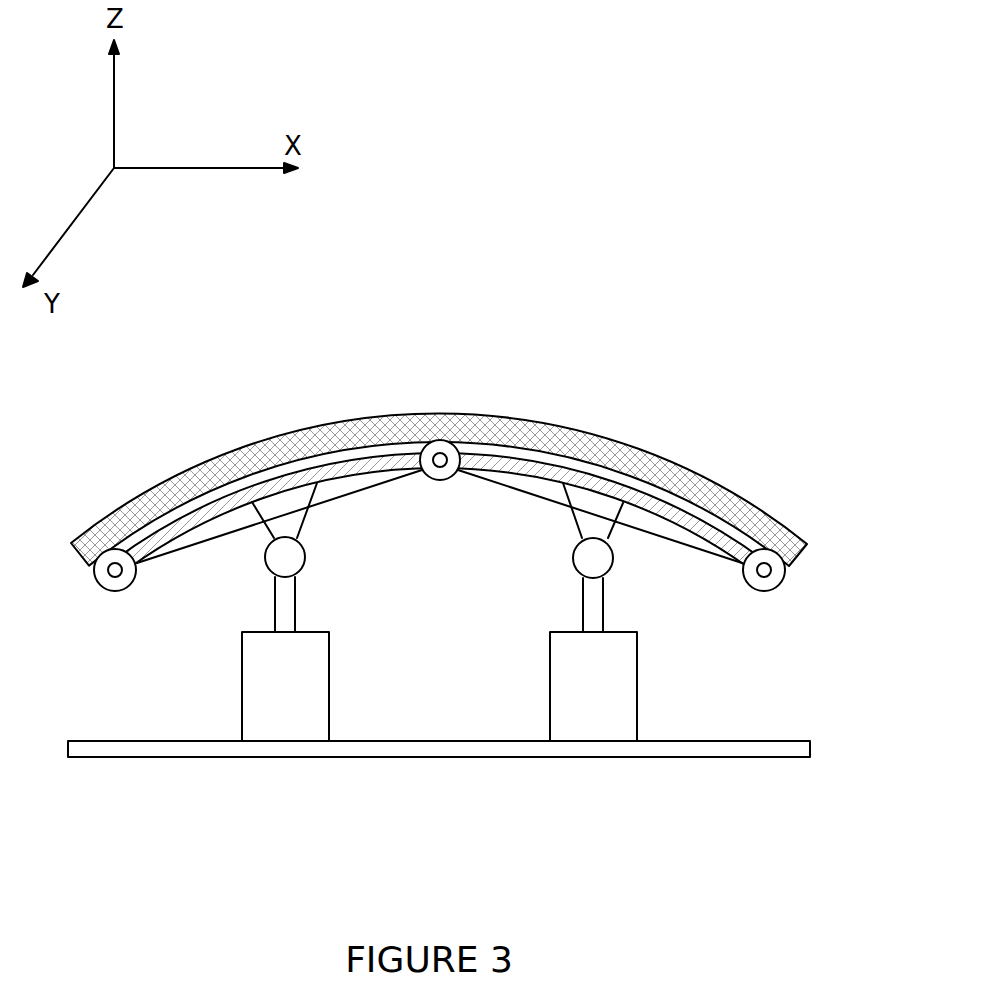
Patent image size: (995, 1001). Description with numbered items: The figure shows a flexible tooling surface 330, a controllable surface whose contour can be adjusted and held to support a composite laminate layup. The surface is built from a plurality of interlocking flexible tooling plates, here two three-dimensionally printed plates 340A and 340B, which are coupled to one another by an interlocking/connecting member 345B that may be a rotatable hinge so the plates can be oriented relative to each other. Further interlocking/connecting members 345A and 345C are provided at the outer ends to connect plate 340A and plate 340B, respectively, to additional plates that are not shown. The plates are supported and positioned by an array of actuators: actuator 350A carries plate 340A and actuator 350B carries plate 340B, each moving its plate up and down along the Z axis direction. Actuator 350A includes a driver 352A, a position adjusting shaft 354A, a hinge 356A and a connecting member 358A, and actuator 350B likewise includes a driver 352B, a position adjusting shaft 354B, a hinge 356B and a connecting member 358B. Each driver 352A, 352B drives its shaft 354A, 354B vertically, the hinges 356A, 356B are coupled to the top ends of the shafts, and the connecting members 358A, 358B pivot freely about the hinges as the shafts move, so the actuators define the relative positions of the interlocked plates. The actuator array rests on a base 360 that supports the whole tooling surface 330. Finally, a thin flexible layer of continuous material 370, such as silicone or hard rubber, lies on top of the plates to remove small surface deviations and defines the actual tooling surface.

The flexible tooling surface 330 is at (634, 271).
The flexible tooling plate 340A is at (181, 578).
The flexible tooling plate 340B is at (724, 519).
The interlocking/connecting member 345A is at (116, 563).
The interlocking/connecting member 345B is at (442, 453).
The interlocking/connecting member 345C is at (770, 565).
The plate actuator 350A is at (389, 612).
The plate actuator 350B is at (621, 684).
The driver 352A is at (336, 686).
The driver 352B is at (586, 724).
The position adjusting shaft 354A is at (285, 605).
The position adjusting shaft 354B is at (590, 600).
The hinge 356A is at (293, 557).
The hinge 356B is at (598, 565).
The connecting member 358A is at (298, 516).
The connecting member 358B is at (603, 522).
The base 360 is at (350, 748).
The flexible material layer 370 is at (555, 440).